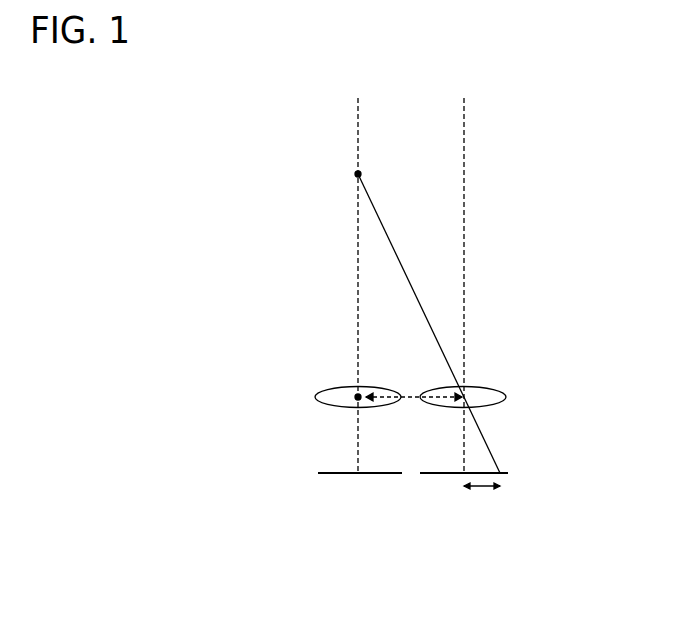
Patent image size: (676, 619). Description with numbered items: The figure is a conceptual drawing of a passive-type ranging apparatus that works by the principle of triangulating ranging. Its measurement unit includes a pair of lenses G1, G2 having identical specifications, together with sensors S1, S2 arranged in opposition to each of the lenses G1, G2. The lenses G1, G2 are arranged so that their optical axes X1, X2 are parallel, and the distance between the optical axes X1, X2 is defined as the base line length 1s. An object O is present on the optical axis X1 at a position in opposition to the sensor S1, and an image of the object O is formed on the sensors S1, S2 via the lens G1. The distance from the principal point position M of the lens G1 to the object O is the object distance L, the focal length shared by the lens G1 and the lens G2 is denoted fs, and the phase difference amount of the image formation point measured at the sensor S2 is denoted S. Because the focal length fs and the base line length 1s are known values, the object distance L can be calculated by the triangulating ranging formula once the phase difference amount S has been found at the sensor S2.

The optical axis X1 is at (360, 270).
The optical axis X2 is at (465, 270).
The object O is at (346, 166).
The object distance L is at (415, 323).
The principal point position M is at (356, 393).
The lens G1 is at (338, 397).
The lens G2 is at (482, 397).
The base line length 1s is at (414, 383).
The focal length fs is at (437, 440).
The sensor S1 is at (338, 474).
The sensor S2 is at (481, 474).
The phase difference amount S is at (482, 502).